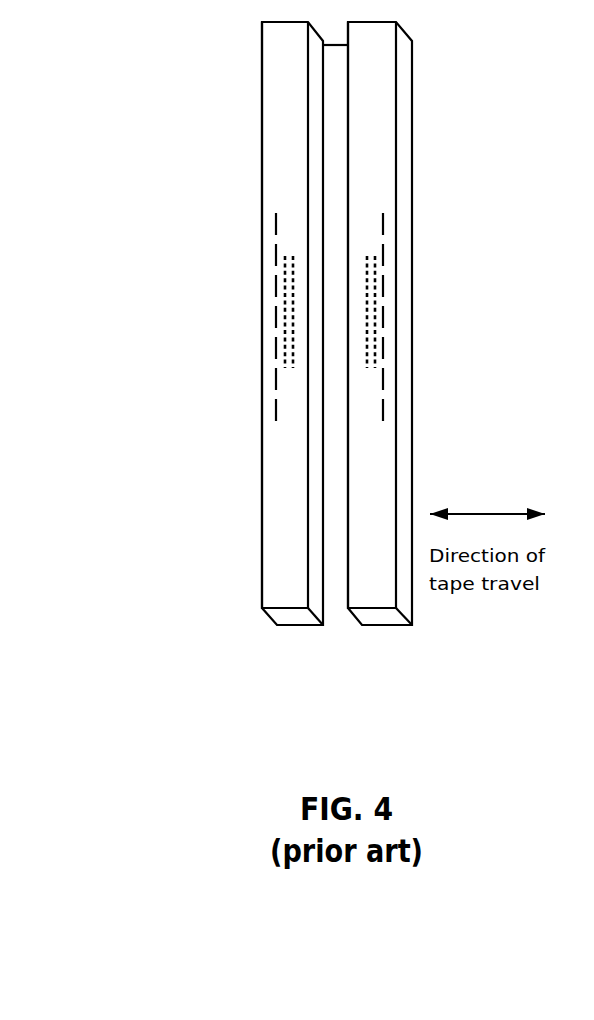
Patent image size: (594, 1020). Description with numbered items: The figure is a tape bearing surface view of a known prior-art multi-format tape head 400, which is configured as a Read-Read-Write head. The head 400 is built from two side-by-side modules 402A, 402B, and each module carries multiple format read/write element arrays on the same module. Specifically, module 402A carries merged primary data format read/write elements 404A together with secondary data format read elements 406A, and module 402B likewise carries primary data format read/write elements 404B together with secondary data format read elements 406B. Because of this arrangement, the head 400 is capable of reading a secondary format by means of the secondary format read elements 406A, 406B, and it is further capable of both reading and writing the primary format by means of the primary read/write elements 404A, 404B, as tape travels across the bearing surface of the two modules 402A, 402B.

The multi-format tape head 400 is at (309, 366).
The module 402A is at (283, 617).
The module 402B is at (378, 617).
The primary data format read/write elements 404A is at (273, 256).
The primary data format read/write elements 404B is at (386, 256).
The secondary data format read elements 406A is at (282, 318).
The secondary data format read elements 406B is at (375, 318).